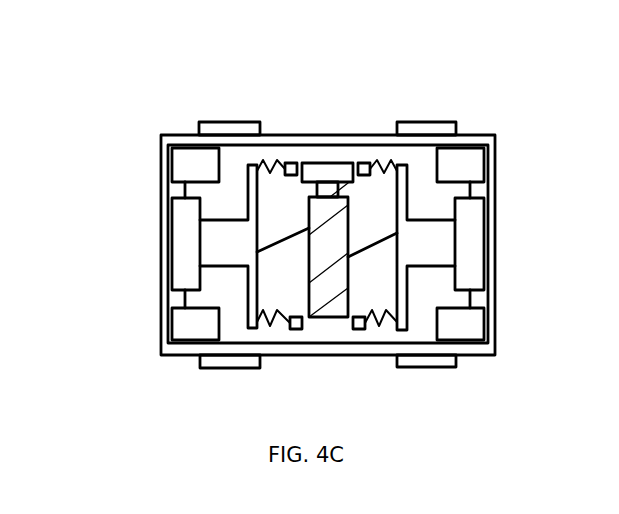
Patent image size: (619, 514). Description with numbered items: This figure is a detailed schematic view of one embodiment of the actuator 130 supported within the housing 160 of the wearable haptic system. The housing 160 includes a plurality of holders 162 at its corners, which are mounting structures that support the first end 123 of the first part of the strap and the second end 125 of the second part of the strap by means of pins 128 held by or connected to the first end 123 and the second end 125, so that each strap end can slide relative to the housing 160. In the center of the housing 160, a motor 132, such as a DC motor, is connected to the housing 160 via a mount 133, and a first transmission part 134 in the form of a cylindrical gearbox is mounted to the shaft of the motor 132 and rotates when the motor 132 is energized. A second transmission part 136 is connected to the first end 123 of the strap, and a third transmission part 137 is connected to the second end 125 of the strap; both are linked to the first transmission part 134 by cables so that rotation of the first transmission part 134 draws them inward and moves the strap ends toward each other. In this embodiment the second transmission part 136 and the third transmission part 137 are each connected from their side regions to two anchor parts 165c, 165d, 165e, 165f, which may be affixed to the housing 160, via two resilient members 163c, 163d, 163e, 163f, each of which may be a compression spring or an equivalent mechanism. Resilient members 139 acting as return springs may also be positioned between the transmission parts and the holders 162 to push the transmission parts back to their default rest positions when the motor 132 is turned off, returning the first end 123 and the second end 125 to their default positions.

The actuator 130 is at (127, 124).
The housing 160 is at (492, 135).
The resilient member 139 is at (225, 160).
The holder 162 is at (180, 165).
The pin 128 is at (185, 195).
The first end 123 is at (188, 245).
The second end 125 is at (473, 242).
The second transmission part 136 is at (258, 268).
The third transmission part 137 is at (401, 331).
The motor 132 is at (328, 219).
The mount 133 is at (330, 163).
The first transmission part 134 is at (345, 318).
The resilient member 163c is at (277, 165).
The resilient member 163d is at (278, 330).
The resilient member 163e is at (378, 162).
The resilient member 163f is at (380, 326).
The anchor part 165c is at (291, 163).
The anchor part 165d is at (297, 330).
The anchor part 165e is at (362, 163).
The anchor part 165f is at (360, 330).